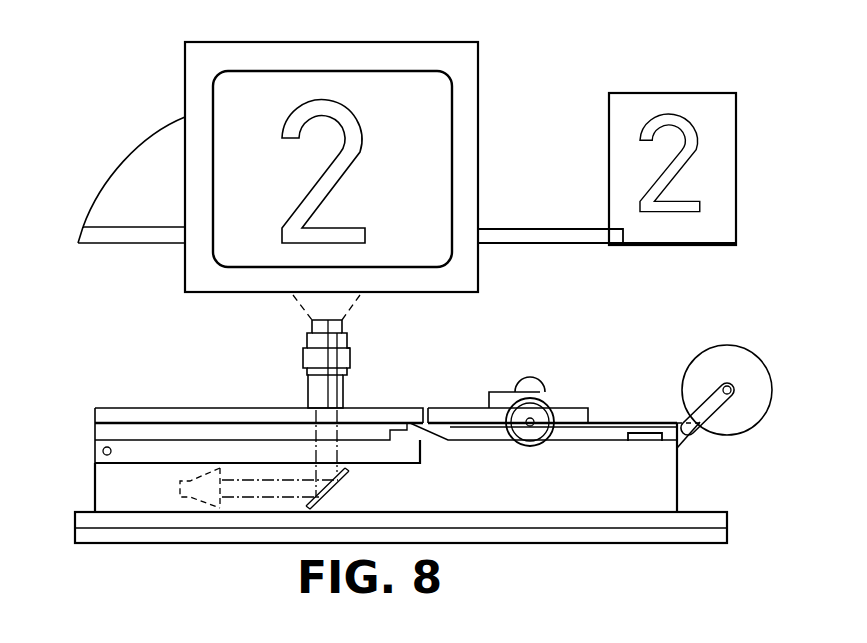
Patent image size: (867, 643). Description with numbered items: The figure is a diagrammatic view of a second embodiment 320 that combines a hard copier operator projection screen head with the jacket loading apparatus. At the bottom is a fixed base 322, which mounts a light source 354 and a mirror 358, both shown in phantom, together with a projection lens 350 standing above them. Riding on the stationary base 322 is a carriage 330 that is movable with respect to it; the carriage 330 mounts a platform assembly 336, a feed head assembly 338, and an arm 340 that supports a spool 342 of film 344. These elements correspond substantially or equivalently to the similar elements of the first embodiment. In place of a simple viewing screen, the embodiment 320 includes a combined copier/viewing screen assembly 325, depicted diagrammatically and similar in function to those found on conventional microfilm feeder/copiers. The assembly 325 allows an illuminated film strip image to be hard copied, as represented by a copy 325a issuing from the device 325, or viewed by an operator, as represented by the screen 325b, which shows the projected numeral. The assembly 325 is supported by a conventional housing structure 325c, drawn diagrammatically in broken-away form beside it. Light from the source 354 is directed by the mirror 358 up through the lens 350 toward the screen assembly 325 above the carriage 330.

The second embodiment 320 is at (785, 498).
The fixed base 322 is at (715, 535).
The combined copier/viewing screen assembly 325 is at (185, 87).
The copy 325a is at (737, 158).
The screen 325b is at (432, 139).
The housing structure 325c is at (127, 167).
The carriage 330 is at (107, 492).
The platform assembly 336 is at (181, 408).
The feed head assembly 338 is at (557, 403).
The arm 340 is at (705, 430).
The spool 342 is at (743, 355).
The film 344 is at (648, 420).
The projection lens 350 is at (347, 385).
The light source 354 is at (183, 497).
The mirror 358 is at (336, 500).